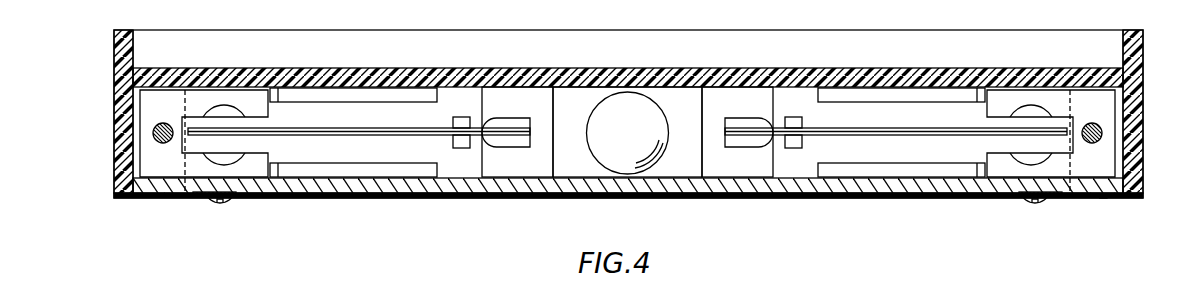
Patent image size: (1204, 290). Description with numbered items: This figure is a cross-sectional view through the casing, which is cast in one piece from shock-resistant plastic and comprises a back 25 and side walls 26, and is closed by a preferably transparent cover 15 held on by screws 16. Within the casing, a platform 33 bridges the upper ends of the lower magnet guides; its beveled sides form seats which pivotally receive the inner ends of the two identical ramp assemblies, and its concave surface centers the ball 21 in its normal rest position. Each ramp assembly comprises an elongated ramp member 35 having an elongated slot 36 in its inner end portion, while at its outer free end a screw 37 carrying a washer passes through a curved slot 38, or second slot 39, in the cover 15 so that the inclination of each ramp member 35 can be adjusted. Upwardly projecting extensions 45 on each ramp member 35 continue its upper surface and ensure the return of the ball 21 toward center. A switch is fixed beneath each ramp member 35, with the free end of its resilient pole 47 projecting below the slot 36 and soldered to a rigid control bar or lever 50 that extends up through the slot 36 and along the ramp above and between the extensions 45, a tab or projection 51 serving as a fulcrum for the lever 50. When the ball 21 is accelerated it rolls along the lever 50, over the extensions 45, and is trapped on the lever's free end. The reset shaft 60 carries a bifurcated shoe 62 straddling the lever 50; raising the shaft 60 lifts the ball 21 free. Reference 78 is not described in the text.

The cover 15 is at (677, 183).
The screws 16 is at (1110, 195).
The ball 21 is at (592, 117).
The back 25 is at (283, 75).
The side walls 26 is at (1145, 128).
The platform 33 is at (573, 163).
The ramp member 35 is at (362, 150).
The slot 36 is at (507, 123).
The screw 37 is at (210, 203).
The slot 38 is at (1012, 190).
The second slot 39 is at (233, 203).
The extensions 45 is at (313, 172).
The resilient pole 47 is at (500, 142).
The control bar or lever 50 is at (422, 135).
The tab or projection 51 is at (462, 117).
The shaft 60 is at (155, 128).
The bifurcated shoe 62 is at (155, 167).
The reference 78 is at (952, 287).